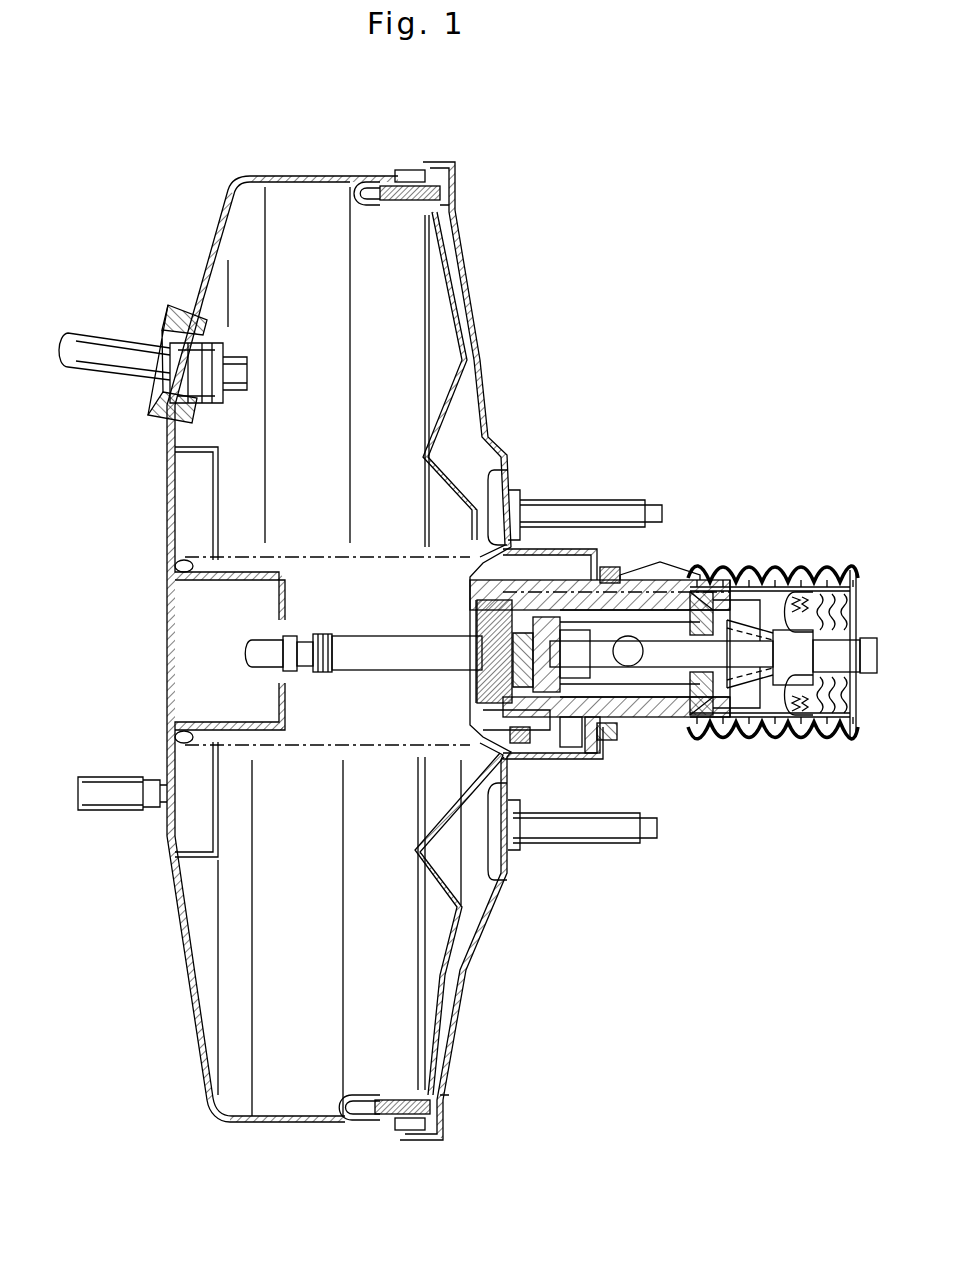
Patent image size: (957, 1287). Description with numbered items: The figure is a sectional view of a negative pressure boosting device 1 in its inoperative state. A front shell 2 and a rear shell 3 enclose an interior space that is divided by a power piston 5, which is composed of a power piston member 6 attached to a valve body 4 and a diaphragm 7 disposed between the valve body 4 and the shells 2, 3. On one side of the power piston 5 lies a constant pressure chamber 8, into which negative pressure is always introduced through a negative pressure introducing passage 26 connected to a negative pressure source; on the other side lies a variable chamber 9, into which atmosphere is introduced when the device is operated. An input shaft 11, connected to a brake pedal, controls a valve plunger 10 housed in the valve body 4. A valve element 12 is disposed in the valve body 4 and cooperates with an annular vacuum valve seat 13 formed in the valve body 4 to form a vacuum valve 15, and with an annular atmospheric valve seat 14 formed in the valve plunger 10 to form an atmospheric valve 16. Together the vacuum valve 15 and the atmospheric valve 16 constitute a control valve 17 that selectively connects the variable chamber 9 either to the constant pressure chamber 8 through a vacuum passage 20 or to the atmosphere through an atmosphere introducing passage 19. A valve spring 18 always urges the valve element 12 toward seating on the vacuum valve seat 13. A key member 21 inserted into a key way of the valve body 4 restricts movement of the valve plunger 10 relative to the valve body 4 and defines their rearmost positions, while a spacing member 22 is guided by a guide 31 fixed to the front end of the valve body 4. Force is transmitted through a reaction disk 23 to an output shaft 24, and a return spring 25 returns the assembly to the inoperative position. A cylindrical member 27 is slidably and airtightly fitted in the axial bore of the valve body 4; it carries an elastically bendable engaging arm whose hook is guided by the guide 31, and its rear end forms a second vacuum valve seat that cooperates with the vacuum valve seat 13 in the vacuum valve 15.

The negative pressure boosting device 1 is at (606, 232).
The front shell 2 is at (248, 178).
The rear shell 3 is at (470, 300).
The valve body 4 is at (582, 598).
The power piston 5 is at (301, 318).
The power piston member 6 is at (425, 345).
The diaphragm 7 is at (350, 302).
The constant pressure chamber 8 is at (288, 468).
The variable chamber 9 is at (439, 468).
The valve plunger 10 is at (620, 722).
The input shaft 11 is at (830, 732).
The valve element 12 is at (726, 722).
The vacuum valve seat 13 is at (680, 590).
The atmospheric valve seat 14 is at (712, 722).
The vacuum valve 15 is at (700, 598).
The atmospheric valve 16 is at (748, 600).
The control valve 17 is at (722, 527).
The valve spring 18 is at (792, 600).
The atmosphere introducing passage 19 is at (768, 727).
The vacuum passage 20 is at (556, 592).
The key member 21 is at (592, 720).
The spacing member 22 is at (522, 712).
The reaction disk 23 is at (478, 620).
The output shaft 24 is at (396, 666).
The return spring 25 is at (192, 742).
The negative pressure introducing passage 26 is at (131, 334).
The cylindrical member 27 is at (648, 562).
The guide 31 is at (560, 577).